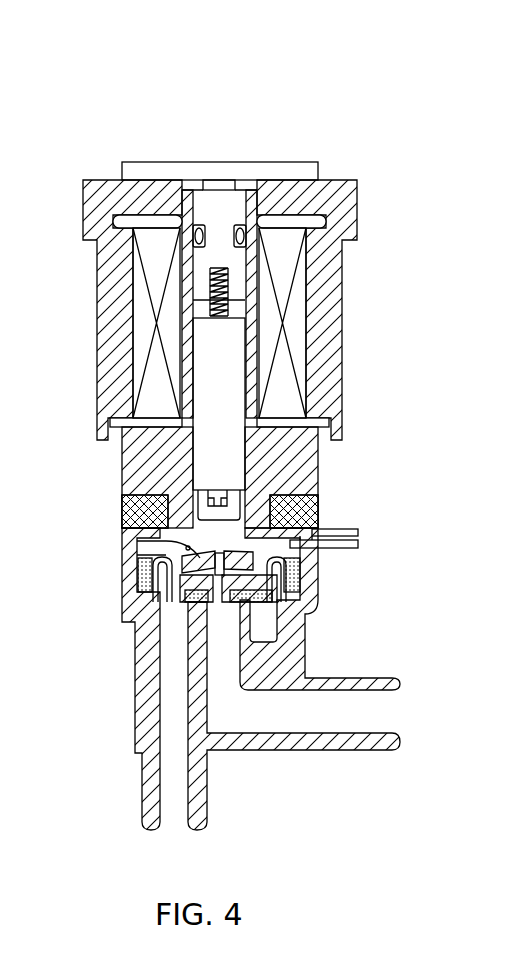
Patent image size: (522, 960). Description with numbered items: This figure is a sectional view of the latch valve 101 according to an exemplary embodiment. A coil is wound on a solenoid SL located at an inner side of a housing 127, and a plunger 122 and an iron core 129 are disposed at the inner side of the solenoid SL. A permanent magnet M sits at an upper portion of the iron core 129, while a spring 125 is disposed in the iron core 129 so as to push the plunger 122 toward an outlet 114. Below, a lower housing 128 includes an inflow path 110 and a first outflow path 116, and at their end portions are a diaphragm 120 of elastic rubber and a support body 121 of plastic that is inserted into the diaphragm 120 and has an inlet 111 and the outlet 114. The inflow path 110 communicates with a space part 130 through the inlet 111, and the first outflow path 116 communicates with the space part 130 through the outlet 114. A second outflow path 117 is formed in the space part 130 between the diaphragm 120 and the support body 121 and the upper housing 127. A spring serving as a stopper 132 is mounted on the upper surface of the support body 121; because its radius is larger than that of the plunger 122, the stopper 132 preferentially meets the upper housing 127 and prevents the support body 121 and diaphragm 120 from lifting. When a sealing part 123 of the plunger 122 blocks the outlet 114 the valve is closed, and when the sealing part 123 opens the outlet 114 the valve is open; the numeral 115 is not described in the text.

The latch valve 101 is at (103, 82).
The permanent magnet M is at (227, 183).
The iron core 129 is at (240, 195).
The spring 125 is at (225, 278).
The solenoid SL is at (295, 323).
The plunger 122 is at (233, 368).
The housing 127 is at (332, 412).
The space part 130 is at (313, 467).
The second outflow path 117 is at (325, 532).
The sealing part 123 is at (207, 508).
The stopper 132 is at (158, 543).
The inlet 111 is at (140, 580).
The support body 121 is at (298, 571).
The diaphragm 120 is at (300, 590).
The outlet 114 is at (303, 622).
The inflow path 110 is at (173, 663).
The lower housing 128 is at (143, 700).
The terminal pin 115 is at (167, 783).
The first outflow path 116 is at (362, 743).